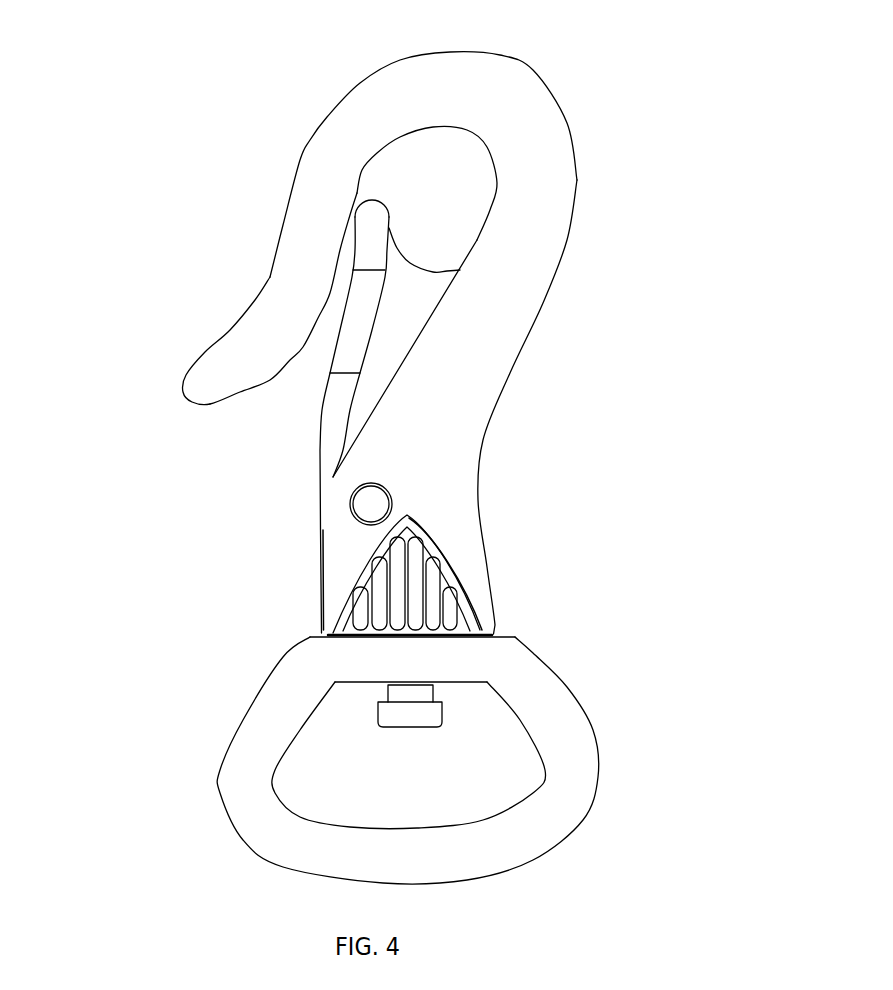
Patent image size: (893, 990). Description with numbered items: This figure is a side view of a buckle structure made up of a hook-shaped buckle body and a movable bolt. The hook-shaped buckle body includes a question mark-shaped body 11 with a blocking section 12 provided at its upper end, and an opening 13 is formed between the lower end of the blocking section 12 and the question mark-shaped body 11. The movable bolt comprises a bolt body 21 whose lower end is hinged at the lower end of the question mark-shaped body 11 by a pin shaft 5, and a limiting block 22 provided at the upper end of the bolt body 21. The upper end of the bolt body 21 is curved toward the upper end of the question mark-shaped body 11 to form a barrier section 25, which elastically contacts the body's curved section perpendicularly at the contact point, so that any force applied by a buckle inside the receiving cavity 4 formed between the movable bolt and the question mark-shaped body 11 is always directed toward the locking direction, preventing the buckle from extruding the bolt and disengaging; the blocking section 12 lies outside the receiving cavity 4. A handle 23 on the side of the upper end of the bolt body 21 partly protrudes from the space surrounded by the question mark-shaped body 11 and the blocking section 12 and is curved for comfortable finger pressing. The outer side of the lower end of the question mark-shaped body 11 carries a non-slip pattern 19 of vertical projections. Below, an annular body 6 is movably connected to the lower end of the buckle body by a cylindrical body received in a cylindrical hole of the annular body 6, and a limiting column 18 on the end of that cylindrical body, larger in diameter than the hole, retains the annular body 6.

The receiving cavity 4 is at (425, 167).
The question mark-shaped body 11 is at (519, 158).
The blocking section 12 is at (296, 276).
The opening 13 is at (300, 397).
The barrier section 25 is at (366, 194).
The bolt body 21 is at (343, 422).
The limiting block 22 is at (407, 293).
The handle 23 is at (357, 330).
The pin shaft 5 is at (374, 503).
The non-slip pattern 19 is at (417, 580).
The limiting column 18 is at (417, 713).
The annular body 6 is at (553, 738).